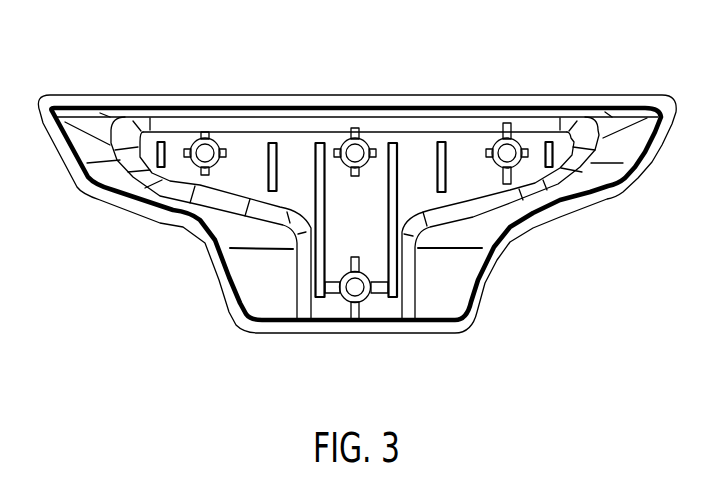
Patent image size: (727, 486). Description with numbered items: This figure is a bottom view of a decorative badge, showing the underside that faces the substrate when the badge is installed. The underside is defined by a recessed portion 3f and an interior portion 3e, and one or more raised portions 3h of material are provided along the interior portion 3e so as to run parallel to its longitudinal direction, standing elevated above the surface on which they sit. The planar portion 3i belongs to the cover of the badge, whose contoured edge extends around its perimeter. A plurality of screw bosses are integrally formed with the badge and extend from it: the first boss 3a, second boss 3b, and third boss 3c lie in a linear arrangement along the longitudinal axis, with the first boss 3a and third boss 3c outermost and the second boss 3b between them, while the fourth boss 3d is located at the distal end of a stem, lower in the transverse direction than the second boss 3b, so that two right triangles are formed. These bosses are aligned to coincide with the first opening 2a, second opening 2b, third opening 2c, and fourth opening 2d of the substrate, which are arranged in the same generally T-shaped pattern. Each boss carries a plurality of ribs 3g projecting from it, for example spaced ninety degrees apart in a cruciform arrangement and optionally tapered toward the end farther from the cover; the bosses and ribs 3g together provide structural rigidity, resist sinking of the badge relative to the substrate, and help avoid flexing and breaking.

The first opening 2a is at (213, 133).
The second opening 2b is at (357, 130).
The third opening 2c is at (513, 167).
The fourth opening 2d is at (369, 300).
The first boss 3a is at (200, 143).
The second boss 3b is at (350, 134).
The third boss 3c is at (518, 148).
The fourth boss 3d is at (348, 304).
The interior portion 3e is at (457, 190).
The recessed portion 3f is at (621, 122).
The ribs 3g is at (225, 153).
The raised portions 3h is at (444, 140).
The planar portion 3i is at (651, 167).